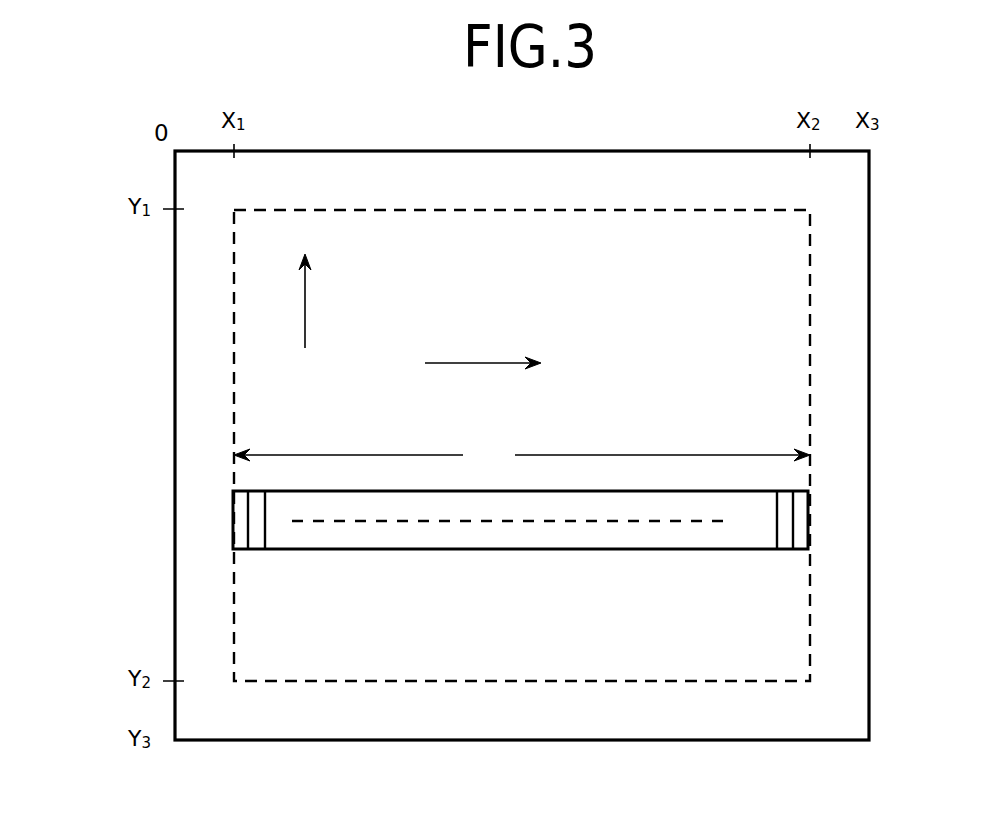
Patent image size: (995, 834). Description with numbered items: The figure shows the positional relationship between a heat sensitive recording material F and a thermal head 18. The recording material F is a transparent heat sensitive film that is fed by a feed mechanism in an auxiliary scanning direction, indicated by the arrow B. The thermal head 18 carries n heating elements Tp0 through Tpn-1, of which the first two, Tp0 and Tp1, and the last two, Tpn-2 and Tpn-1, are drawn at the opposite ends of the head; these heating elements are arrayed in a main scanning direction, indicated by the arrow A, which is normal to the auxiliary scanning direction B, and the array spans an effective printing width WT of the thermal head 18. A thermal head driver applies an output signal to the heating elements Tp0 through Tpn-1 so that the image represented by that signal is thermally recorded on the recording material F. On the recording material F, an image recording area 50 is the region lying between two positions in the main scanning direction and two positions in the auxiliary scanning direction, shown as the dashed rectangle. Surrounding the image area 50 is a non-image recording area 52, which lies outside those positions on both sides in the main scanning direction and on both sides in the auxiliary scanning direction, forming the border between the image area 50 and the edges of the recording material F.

The non-image recording area 52 is at (386, 158).
The image recording area 50 is at (548, 210).
The thermal head 18 is at (515, 550).
The heat sensitive recording material F is at (668, 153).
The heating element Tp0 is at (237, 543).
The heating element Tp1 is at (258, 543).
The heating element Tpn-2 is at (783, 545).
The heating element Tpn-1 is at (800, 550).
The effective printing width WT is at (522, 455).
The main scanning direction A is at (483, 351).
The auxiliary scanning direction B is at (296, 301).